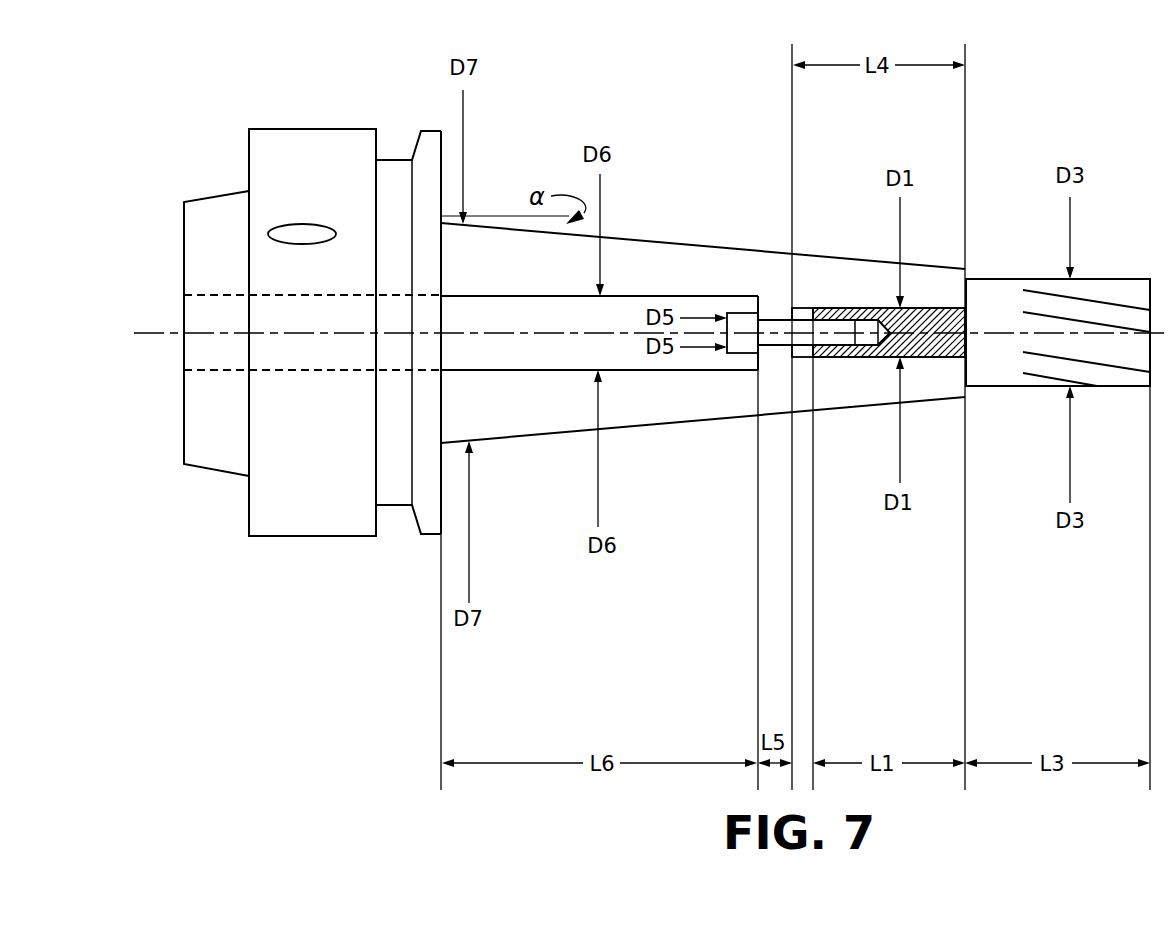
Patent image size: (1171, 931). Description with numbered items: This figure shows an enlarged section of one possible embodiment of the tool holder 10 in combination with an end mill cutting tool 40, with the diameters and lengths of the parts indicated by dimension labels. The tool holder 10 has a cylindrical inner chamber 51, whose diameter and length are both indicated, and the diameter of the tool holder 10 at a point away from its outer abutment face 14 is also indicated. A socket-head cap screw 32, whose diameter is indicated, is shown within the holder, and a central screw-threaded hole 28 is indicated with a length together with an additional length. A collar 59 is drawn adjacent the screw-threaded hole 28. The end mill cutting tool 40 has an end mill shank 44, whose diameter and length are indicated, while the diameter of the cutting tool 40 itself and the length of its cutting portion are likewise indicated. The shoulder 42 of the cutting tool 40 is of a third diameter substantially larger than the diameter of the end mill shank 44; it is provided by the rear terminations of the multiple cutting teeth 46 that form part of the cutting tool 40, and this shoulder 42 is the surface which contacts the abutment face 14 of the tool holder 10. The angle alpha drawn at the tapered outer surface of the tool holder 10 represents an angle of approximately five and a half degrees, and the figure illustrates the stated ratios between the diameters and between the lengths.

The tool holder 10 is at (307, 128).
The cylindrical inner chamber 51 is at (623, 310).
The socket-head cap screw 32 is at (741, 340).
The collar 59 is at (802, 307).
The central screw-threaded hole 28 is at (848, 357).
The end mill shank 44 is at (953, 357).
The shoulder 42 is at (995, 320).
The end mill cutting tool 40 is at (1103, 278).
The abutment face 14 is at (967, 374).
The cutting teeth 46 is at (1117, 367).